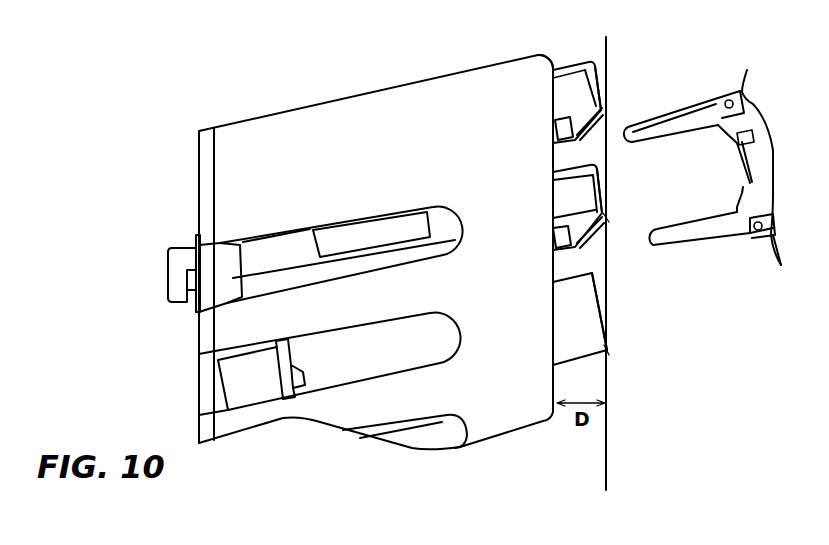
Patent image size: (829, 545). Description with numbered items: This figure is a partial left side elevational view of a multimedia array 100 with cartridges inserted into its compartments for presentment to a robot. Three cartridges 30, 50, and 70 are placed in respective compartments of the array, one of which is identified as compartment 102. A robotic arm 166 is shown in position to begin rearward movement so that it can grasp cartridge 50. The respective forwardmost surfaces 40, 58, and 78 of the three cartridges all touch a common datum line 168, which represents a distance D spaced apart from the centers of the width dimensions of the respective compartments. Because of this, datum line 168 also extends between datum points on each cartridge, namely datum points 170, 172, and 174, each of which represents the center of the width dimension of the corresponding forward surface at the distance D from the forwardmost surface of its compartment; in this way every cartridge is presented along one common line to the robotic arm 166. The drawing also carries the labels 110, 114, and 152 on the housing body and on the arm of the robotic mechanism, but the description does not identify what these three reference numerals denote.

The multimedia array 100 is at (253, 118).
The compartment 102 is at (548, 62).
The connector housing 110 is at (283, 155).
The contact receiving passage 114 is at (553, 86).
The cartridge 30 is at (562, 97).
The forwardmost surface 40 is at (603, 80).
The cartridge 50 is at (565, 200).
The forwardmost surface 58 is at (598, 188).
The cartridge 70 is at (565, 322).
The forwardmost surface 78 is at (595, 290).
The frame arm 152 is at (620, 131).
The robotic arm 166 is at (697, 230).
The datum line 168 is at (608, 373).
The datum point 170 is at (607, 103).
The datum point 172 is at (605, 218).
The datum point 174 is at (608, 350).